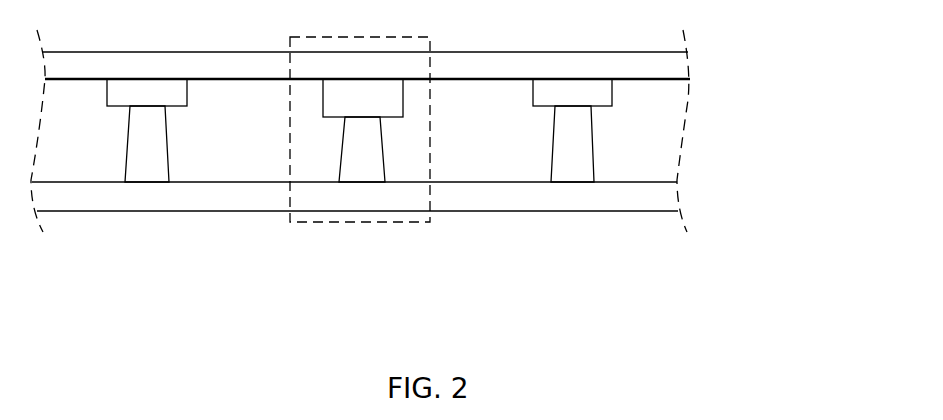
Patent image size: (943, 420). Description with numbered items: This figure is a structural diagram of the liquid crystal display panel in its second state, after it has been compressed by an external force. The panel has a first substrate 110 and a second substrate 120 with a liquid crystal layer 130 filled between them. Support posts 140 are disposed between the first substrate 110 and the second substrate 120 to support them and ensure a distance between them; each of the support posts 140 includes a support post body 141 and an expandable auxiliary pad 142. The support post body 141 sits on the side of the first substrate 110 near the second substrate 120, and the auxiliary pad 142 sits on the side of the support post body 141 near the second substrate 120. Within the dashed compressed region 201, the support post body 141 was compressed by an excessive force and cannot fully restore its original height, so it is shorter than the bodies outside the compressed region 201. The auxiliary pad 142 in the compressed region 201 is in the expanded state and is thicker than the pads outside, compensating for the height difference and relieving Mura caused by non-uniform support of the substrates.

The first substrate 110 is at (660, 201).
The second substrate 120 is at (677, 66).
The liquid crystal layer 130 is at (660, 169).
The support posts 140 is at (437, 193).
The support post body 141 is at (582, 135).
The auxiliary pad 142 is at (603, 92).
The compressed region 201 is at (430, 222).